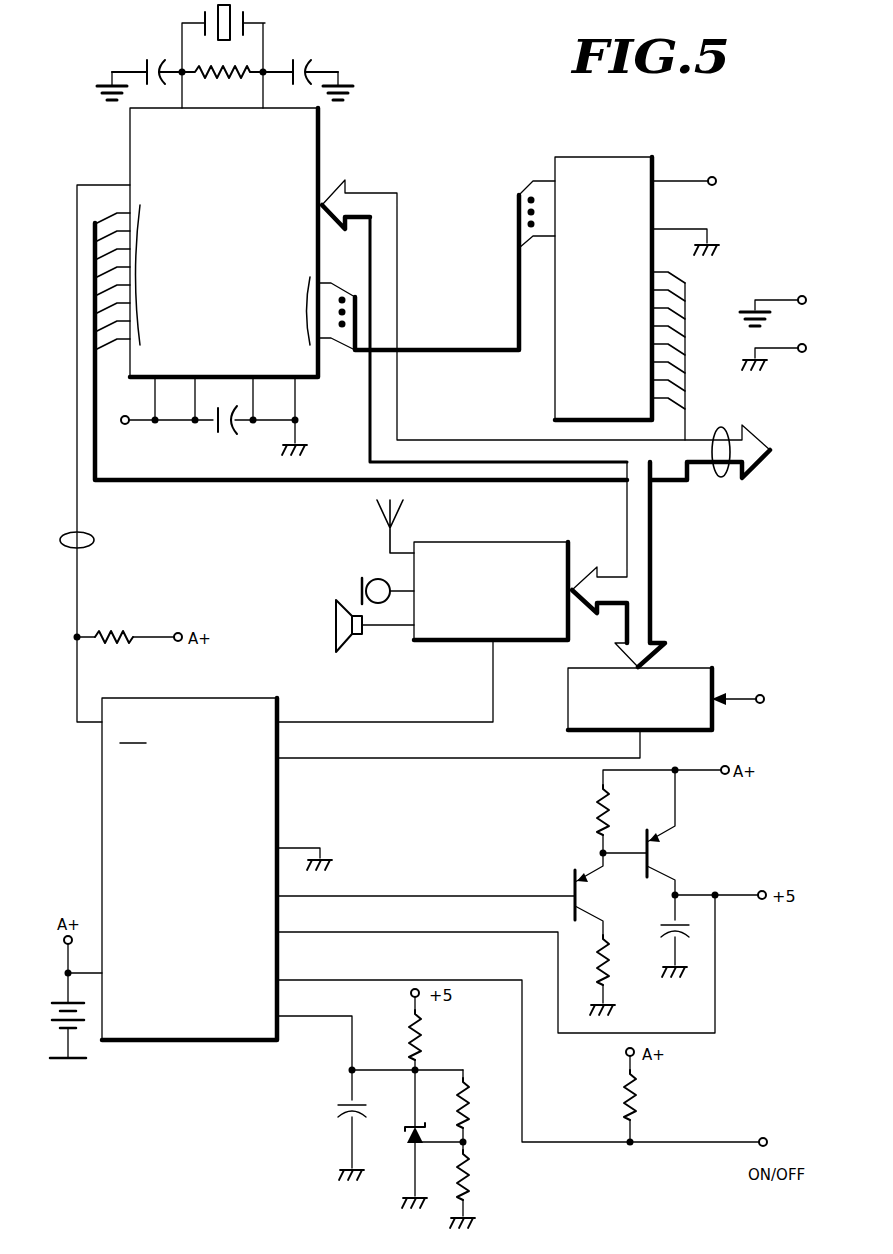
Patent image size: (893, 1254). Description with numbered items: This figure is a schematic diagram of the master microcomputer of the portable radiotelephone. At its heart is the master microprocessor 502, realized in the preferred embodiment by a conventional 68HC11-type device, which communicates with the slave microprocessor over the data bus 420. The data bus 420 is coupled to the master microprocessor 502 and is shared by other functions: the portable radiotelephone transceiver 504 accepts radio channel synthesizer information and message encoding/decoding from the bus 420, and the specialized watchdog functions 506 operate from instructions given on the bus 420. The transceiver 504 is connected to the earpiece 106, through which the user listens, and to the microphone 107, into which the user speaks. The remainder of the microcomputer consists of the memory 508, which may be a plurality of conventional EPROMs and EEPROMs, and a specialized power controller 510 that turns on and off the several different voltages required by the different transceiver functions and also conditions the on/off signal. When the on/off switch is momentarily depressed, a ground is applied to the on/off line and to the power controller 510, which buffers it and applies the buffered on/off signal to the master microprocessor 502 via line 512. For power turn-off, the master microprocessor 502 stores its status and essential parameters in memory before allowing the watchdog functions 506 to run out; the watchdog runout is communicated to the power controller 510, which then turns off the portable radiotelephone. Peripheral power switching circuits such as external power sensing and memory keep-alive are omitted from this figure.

The master microprocessor 502 is at (324, 138).
The memory 508 is at (602, 157).
The portable radiotelephone transceiver 504 is at (493, 542).
The watchdog functions 506 is at (568, 700).
The power controller 510 is at (190, 698).
The line 512 is at (96, 540).
The data bus 420 is at (722, 427).
The earpiece 106 is at (329, 628).
The microphone 107 is at (356, 590).